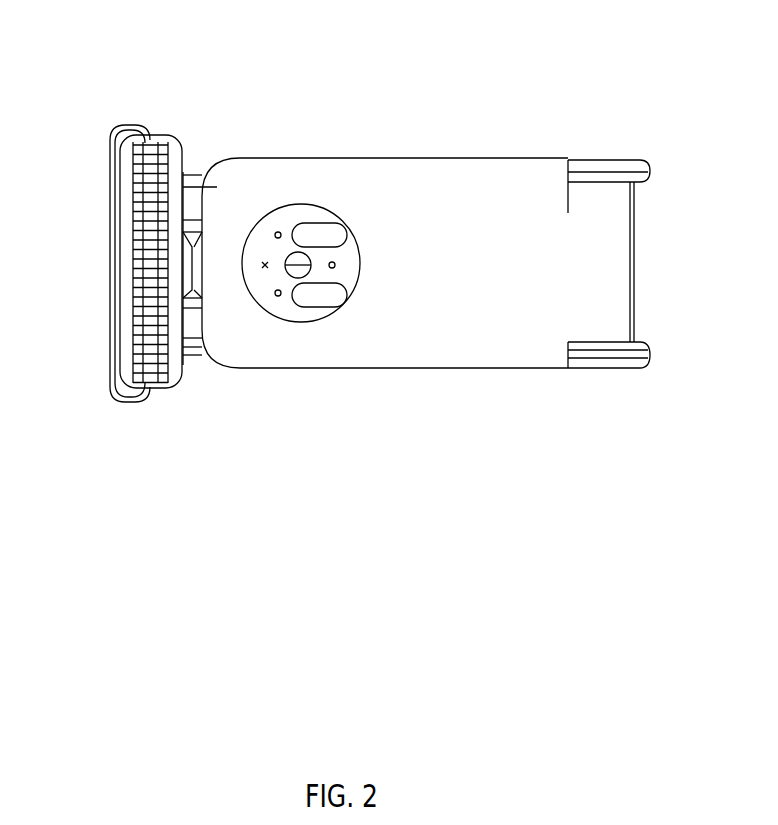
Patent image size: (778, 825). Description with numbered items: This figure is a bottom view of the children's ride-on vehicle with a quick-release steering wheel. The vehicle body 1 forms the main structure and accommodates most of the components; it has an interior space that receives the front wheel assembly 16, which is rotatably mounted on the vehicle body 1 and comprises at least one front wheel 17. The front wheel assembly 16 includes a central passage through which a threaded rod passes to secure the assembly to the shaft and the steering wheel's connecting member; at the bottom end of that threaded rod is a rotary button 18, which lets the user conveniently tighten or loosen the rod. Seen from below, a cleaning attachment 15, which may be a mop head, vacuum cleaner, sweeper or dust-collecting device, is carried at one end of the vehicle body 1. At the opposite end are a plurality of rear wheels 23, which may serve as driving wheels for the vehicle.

The vehicle body 1 is at (378, 192).
The cleaning attachment 15 is at (150, 222).
The front wheel assembly 16 is at (288, 220).
The front wheel 17 is at (317, 293).
The rotary button 18 is at (293, 288).
The rear wheels 23 is at (650, 183).